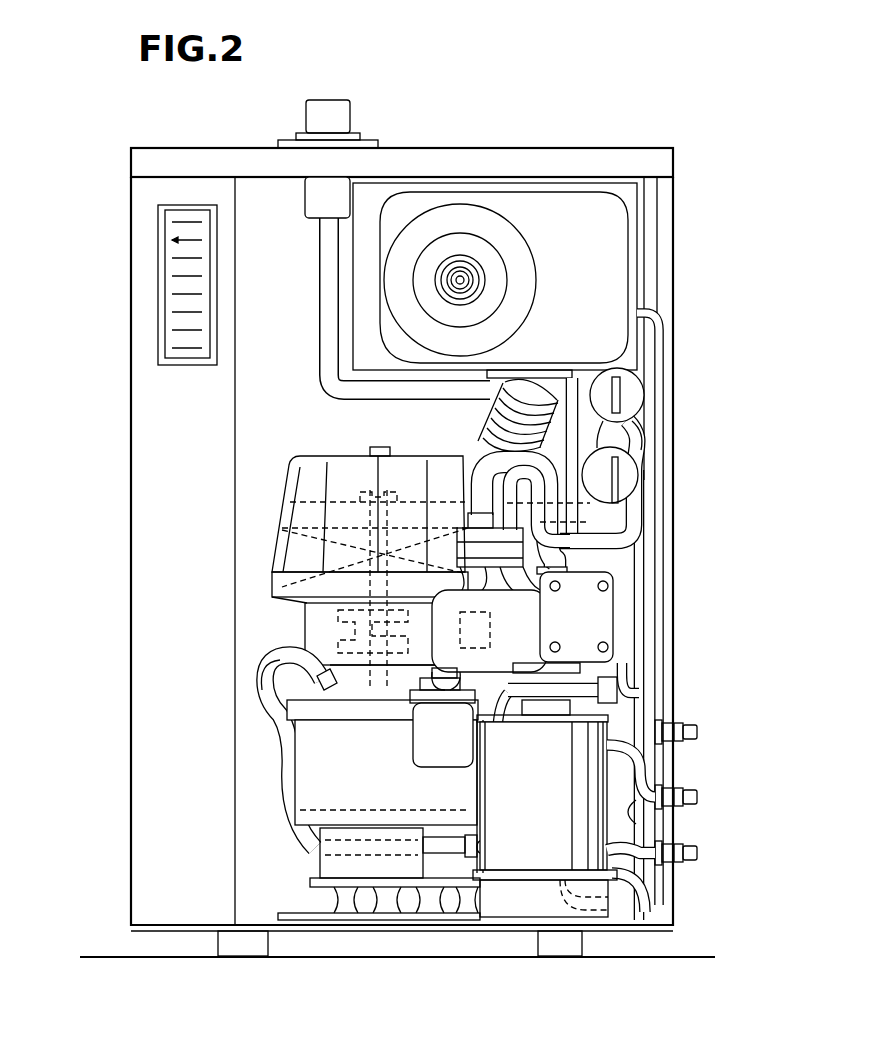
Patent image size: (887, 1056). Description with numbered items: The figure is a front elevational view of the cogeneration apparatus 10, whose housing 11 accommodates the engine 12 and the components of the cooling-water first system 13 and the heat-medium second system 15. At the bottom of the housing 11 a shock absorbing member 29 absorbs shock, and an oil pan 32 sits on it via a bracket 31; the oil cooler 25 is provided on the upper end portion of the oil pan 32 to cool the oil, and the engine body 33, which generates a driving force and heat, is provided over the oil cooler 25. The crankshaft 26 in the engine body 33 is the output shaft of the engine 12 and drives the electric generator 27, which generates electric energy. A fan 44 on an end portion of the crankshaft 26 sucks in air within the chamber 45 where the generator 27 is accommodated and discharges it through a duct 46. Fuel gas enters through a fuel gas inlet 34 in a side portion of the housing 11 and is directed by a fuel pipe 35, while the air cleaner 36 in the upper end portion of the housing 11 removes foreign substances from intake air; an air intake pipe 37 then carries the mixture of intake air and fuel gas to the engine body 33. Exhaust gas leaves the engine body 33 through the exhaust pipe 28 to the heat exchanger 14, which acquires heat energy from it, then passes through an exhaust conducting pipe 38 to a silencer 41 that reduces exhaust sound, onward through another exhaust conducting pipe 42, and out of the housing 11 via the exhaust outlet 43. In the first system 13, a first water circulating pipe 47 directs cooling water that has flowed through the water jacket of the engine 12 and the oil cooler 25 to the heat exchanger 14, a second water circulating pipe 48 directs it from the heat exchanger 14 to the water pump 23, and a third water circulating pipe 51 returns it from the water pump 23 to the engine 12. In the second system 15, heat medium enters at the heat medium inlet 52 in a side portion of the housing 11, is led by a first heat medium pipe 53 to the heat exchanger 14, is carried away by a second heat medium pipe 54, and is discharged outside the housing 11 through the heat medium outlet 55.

The cogeneration apparatus 10 is at (605, 53).
The housing 11 is at (565, 147).
The engine 12 is at (264, 662).
The first system 13 is at (280, 854).
The heat exchanger 14 is at (518, 865).
The second system 15 is at (688, 870).
The water pump 23 is at (645, 665).
The oil cooler 25 is at (337, 717).
The crankshaft 26 is at (300, 633).
The electric generator 27 is at (285, 590).
The exhaust pipe 28 is at (562, 677).
The shock absorbing member 29 is at (407, 900).
The bracket 31 is at (313, 867).
The oil pan 32 is at (373, 822).
The engine body 33 is at (257, 659).
The fuel gas inlet 34 is at (697, 732).
The fuel pipe 35 is at (662, 318).
The air cleaner 36 is at (625, 262).
The air intake pipe 37 is at (590, 435).
The exhaust conducting pipe 38 is at (628, 860).
The silencer 41 is at (644, 384).
The exhaust conducting pipe 42 is at (320, 270).
The exhaust outlet 43 is at (328, 98).
The fan 44 is at (307, 460).
The chamber 45 is at (287, 517).
The duct 46 is at (485, 408).
The first water circulating pipe 47 is at (313, 815).
The second water circulating pipe 48 is at (632, 708).
The third water circulating pipe 51 is at (636, 522).
The heat medium inlet 52 is at (699, 853).
The first heat medium pipe 53 is at (655, 880).
The second heat medium pipe 54 is at (656, 812).
The heat medium outlet 55 is at (697, 797).